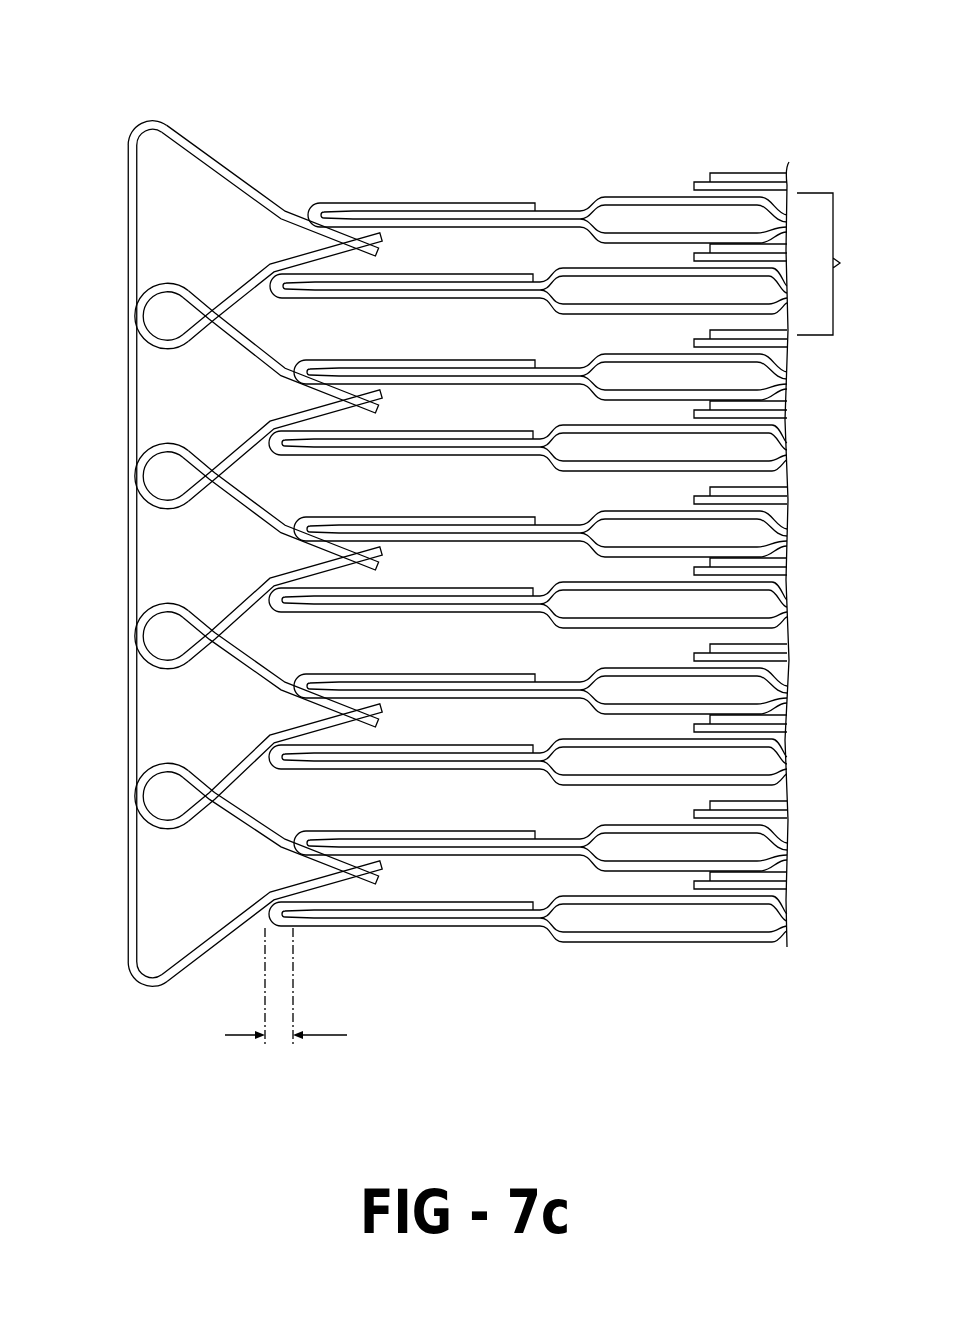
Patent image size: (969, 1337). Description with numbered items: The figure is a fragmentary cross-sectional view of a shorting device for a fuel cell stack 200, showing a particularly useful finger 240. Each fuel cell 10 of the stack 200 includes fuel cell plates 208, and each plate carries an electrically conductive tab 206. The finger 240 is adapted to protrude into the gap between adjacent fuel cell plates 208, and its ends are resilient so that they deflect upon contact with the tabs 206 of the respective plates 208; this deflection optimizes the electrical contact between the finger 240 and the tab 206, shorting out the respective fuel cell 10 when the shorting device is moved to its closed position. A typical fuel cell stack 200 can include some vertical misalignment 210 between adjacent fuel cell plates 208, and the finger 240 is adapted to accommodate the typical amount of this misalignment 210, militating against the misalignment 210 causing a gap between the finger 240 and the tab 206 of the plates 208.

The fuel cell stack 200 is at (605, 103).
The electrically conductive tab 206 is at (325, 200).
The fuel cell plates 208 is at (657, 193).
The finger 240 is at (127, 233).
The fuel cell 10 is at (836, 264).
The vertical misalignment 210 is at (330, 1035).